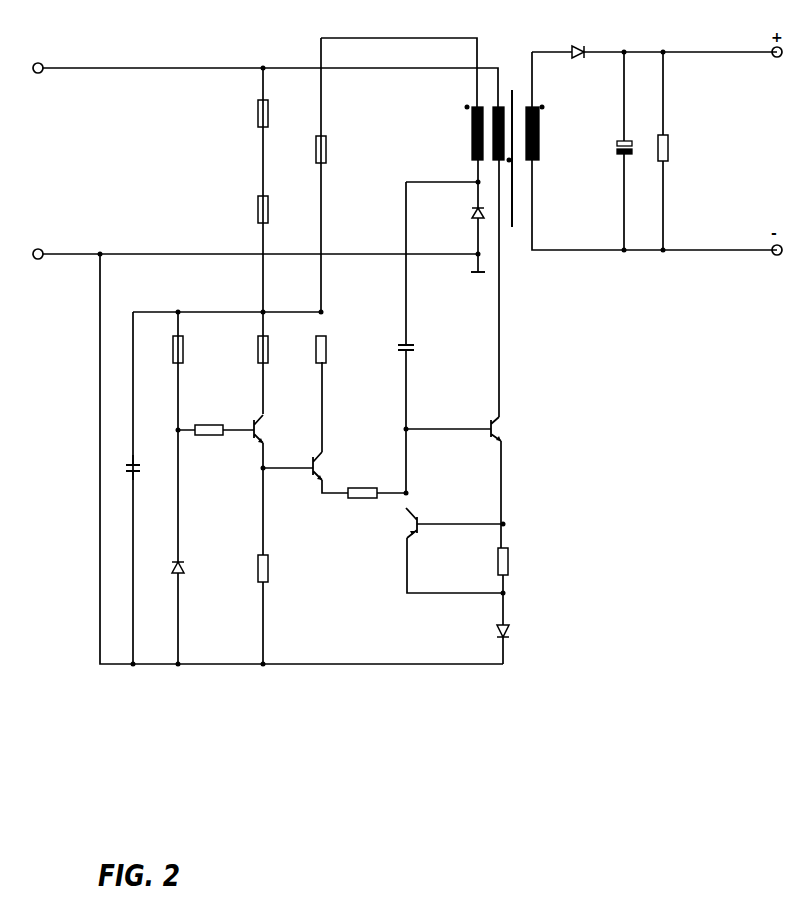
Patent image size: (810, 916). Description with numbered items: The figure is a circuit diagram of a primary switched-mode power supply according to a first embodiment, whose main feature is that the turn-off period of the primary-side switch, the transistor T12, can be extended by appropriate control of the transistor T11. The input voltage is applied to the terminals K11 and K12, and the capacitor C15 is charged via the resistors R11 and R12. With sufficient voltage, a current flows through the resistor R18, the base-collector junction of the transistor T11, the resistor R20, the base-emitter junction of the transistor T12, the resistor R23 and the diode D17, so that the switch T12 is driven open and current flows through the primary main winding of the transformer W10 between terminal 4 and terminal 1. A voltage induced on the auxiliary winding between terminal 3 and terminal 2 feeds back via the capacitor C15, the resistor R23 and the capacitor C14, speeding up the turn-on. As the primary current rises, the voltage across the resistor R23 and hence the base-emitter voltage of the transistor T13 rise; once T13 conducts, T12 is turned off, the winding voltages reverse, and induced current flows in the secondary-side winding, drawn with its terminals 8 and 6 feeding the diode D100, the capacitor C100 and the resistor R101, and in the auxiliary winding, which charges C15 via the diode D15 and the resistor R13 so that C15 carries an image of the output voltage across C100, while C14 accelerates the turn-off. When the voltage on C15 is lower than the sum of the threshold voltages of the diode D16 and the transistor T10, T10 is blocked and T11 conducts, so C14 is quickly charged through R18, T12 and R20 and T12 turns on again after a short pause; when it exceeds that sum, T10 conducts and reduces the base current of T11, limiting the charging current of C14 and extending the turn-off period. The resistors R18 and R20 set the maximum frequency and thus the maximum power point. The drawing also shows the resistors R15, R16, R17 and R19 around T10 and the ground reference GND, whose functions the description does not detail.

The input terminal K11 is at (43, 57).
The input terminal K12 is at (43, 243).
The resistor R11 is at (254, 113).
The resistor R12 is at (254, 209).
The resistor R13 is at (312, 149).
The resistor R15 is at (169, 349).
The resistor R16 is at (209, 421).
The resistor R17 is at (254, 349).
The resistor R18 is at (312, 349).
The resistor R19 is at (254, 568).
The resistor R20 is at (363, 484).
The resistor R23 is at (493, 561).
The load resistor R101 is at (653, 148).
The capacitor C14 is at (395, 345).
The capacitor C15 is at (121, 468).
The capacitor C100 is at (614, 146).
The diode D15 is at (467, 213).
The diode D16 is at (167, 568).
The diode D17 is at (493, 631).
The rectifier diode D100 is at (579, 44).
The transistor T10 is at (252, 424).
The transistor T11 is at (314, 461).
The primary-side switch transistor T12 is at (515, 429).
The transistor T13 is at (423, 529).
The transformer W10 is at (491, 158).
The ground GND is at (483, 287).
The primary main winding terminal 1 is at (493, 179).
The auxiliary winding terminal 2 is at (466, 97).
The auxiliary winding terminal 3 is at (465, 175).
The primary main winding terminal 4 is at (490, 97).
The transformer winding terminal 6 is at (549, 178).
The transformer winding terminal 8 is at (544, 97).